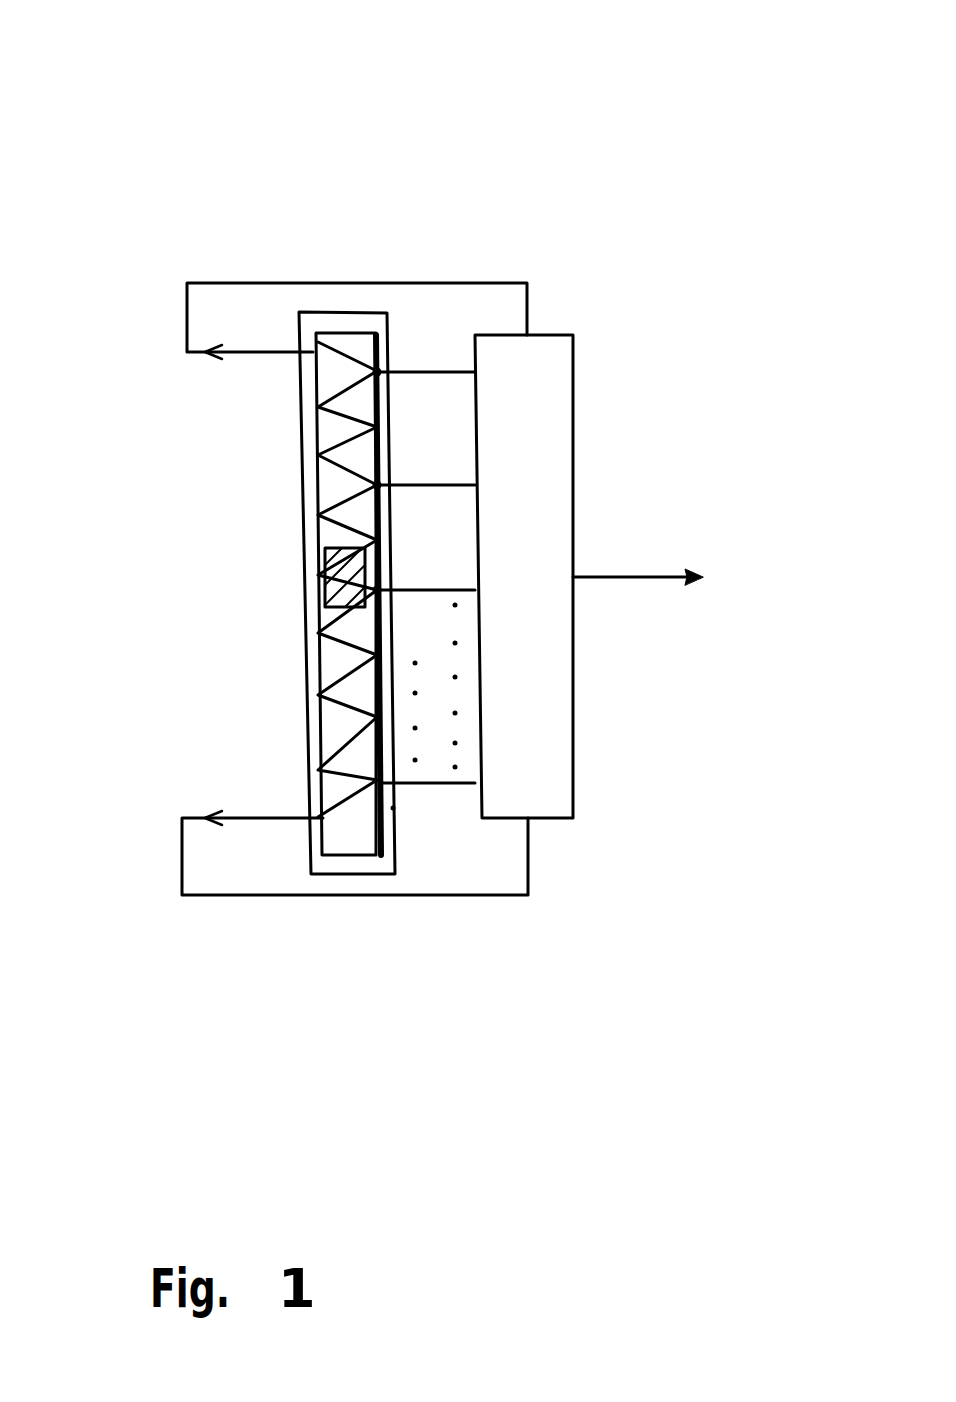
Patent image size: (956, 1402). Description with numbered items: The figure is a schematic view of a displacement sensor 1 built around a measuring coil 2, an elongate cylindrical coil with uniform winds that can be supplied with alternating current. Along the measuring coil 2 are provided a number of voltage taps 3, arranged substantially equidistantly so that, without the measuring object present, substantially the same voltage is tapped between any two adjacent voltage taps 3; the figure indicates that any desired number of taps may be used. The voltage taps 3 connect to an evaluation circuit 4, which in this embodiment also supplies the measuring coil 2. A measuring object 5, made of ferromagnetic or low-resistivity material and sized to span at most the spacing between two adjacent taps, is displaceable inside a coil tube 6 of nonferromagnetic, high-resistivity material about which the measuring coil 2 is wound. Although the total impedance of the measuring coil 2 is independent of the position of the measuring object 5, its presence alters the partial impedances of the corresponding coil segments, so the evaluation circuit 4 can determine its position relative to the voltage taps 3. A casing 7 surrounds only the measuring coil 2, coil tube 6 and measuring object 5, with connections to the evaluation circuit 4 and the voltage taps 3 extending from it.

The displacement sensor 1 is at (392, 193).
The measuring coil 2 is at (313, 450).
The voltage taps 3 is at (405, 372).
The evaluation circuit 4 is at (636, 576).
The measuring object 5 is at (333, 598).
The coil tube 6 is at (327, 704).
The casing 7 is at (348, 875).